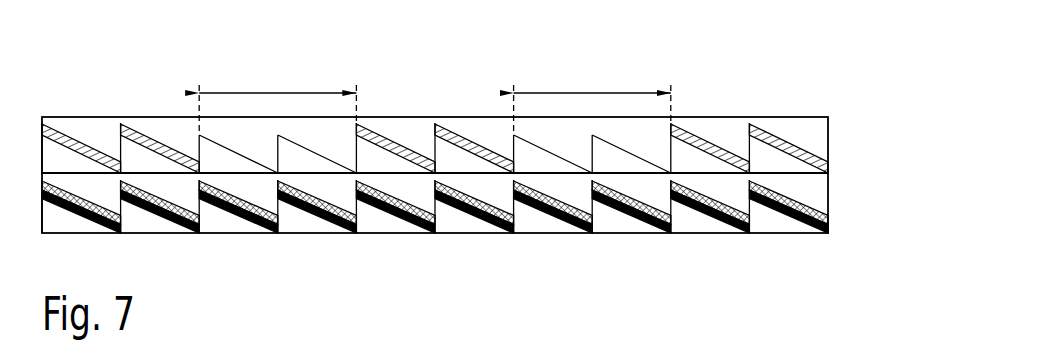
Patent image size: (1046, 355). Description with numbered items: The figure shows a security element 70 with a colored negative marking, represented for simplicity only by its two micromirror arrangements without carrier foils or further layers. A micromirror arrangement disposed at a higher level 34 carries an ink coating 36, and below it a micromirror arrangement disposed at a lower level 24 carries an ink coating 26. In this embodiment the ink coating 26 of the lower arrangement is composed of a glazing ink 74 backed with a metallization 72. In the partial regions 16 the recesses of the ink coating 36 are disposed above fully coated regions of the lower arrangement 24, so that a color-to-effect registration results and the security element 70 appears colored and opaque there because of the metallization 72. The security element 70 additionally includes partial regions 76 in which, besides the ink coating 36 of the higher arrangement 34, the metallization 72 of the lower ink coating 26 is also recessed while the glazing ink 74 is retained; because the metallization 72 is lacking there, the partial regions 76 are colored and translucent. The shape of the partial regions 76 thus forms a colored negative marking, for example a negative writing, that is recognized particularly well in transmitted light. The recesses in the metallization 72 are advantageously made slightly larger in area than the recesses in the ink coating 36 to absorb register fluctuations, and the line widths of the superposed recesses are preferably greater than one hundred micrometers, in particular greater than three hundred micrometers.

The security element 70 is at (57, 88).
The micromirror arrangement disposed at a higher level 34 is at (84, 143).
The ink coating 36 is at (798, 148).
The partial regions 16 is at (277, 101).
The partial regions 76 is at (592, 101).
The ink coating 26 is at (477, 231).
The micromirror arrangement disposed at a lower level 24 is at (74, 210).
The glazing ink 74 is at (798, 205).
The metallization 72 is at (864, 183).